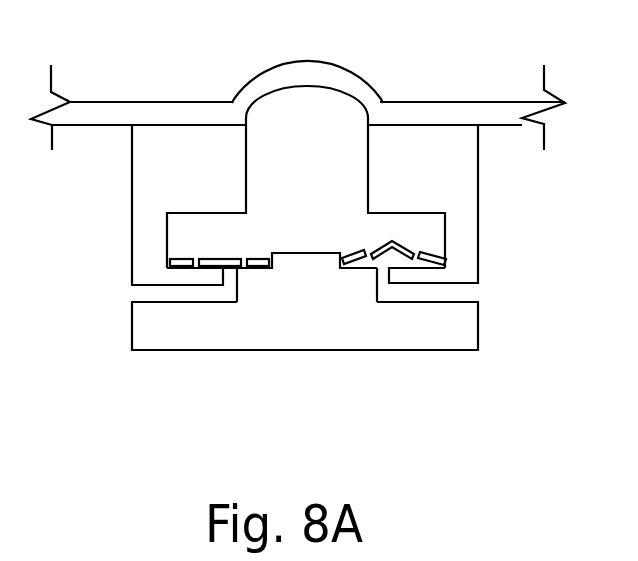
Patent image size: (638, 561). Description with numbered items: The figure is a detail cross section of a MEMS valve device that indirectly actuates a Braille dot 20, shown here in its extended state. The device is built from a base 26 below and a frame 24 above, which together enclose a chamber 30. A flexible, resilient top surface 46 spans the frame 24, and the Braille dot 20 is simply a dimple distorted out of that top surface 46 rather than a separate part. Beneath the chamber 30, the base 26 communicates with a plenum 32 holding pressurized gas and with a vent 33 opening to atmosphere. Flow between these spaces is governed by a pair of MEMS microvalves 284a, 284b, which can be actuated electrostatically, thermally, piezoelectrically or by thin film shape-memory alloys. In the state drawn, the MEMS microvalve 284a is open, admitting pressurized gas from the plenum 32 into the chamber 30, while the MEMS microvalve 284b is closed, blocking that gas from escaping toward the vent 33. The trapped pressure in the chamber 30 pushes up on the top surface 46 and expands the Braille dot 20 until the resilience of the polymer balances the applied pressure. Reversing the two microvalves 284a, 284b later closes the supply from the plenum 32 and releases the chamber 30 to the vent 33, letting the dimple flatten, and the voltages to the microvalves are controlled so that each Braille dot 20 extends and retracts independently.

The Braille dot 20 is at (352, 68).
The top surface 46 is at (160, 102).
The frame 24 is at (132, 190).
The base 26 is at (132, 332).
The chamber 30 is at (405, 213).
The MEMS microvalve 284a is at (413, 250).
The MEMS microvalve 284b is at (201, 258).
The plenum 32 is at (417, 302).
The vent 33 is at (183, 302).